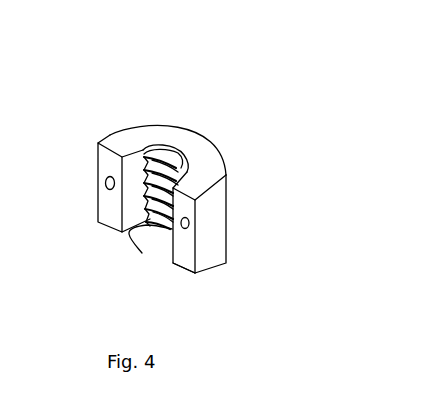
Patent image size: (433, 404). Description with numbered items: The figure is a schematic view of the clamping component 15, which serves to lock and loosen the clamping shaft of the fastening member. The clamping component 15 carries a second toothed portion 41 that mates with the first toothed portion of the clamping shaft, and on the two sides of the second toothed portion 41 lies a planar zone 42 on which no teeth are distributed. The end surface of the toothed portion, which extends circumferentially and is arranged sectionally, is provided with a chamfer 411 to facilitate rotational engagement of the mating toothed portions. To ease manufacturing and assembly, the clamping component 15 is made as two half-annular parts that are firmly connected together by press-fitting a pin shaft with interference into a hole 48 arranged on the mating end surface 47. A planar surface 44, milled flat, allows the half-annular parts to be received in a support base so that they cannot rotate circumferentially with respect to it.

The clamping component 15 is at (213, 114).
The second toothed portion 41 is at (167, 167).
The chamfer 411 is at (142, 253).
The planar zone 42 is at (132, 165).
The planar surface 44 is at (213, 218).
The mating end surface 47 is at (182, 258).
The hole 48 is at (189, 226).